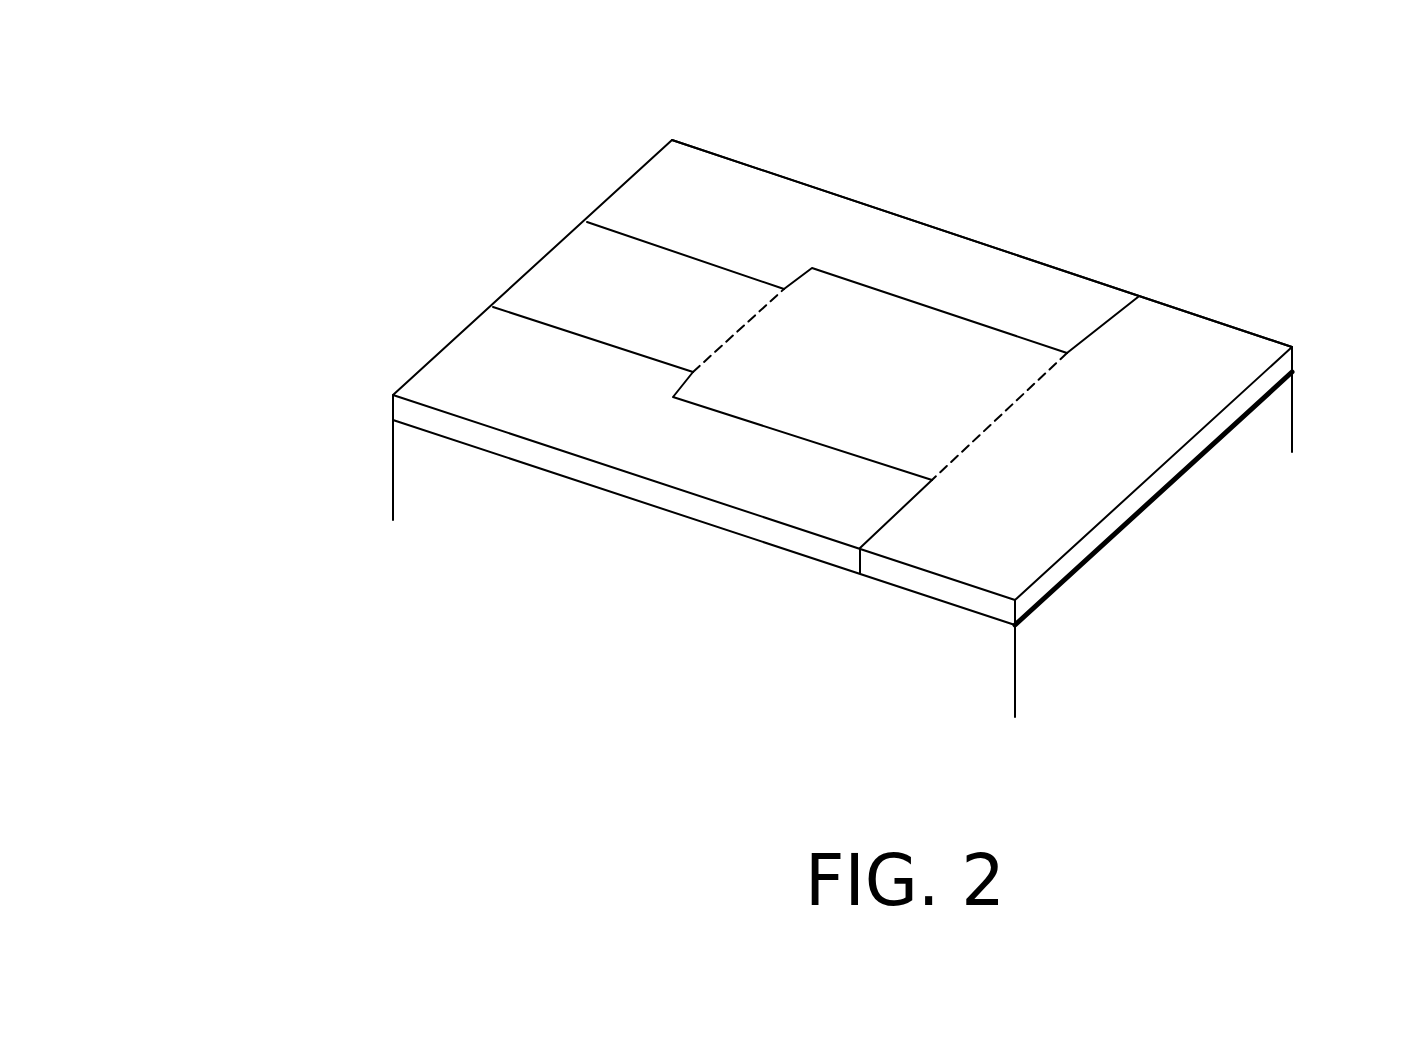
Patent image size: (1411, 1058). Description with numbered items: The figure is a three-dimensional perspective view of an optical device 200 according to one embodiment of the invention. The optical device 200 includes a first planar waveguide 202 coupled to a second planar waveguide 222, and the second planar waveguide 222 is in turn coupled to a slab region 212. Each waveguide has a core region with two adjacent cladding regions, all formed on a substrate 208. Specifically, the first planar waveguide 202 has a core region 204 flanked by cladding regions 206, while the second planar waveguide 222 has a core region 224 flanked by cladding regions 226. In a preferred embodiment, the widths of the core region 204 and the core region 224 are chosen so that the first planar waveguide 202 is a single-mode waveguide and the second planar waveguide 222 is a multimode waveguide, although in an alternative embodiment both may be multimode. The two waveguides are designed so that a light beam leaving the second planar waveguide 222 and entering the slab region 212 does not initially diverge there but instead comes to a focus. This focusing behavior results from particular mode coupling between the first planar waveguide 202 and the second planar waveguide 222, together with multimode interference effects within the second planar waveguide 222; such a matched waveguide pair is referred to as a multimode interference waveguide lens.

The optical device 200 is at (172, 707).
The first planar waveguide 202 is at (732, 135).
The core region 204 is at (575, 276).
The cladding regions 206 is at (803, 215).
The substrate 208 is at (428, 486).
The slab region 212 is at (1232, 308).
The second planar waveguide 222 is at (1010, 227).
The core region 224 is at (902, 397).
The cladding regions 226 is at (1087, 300).